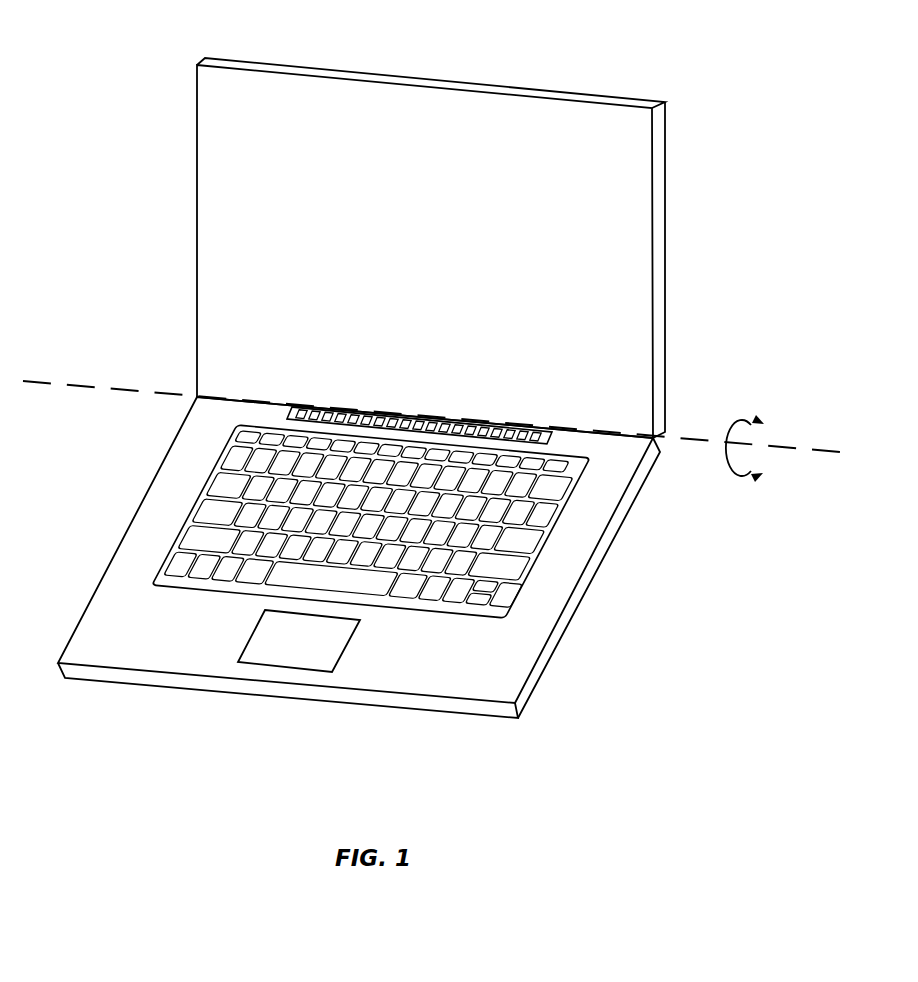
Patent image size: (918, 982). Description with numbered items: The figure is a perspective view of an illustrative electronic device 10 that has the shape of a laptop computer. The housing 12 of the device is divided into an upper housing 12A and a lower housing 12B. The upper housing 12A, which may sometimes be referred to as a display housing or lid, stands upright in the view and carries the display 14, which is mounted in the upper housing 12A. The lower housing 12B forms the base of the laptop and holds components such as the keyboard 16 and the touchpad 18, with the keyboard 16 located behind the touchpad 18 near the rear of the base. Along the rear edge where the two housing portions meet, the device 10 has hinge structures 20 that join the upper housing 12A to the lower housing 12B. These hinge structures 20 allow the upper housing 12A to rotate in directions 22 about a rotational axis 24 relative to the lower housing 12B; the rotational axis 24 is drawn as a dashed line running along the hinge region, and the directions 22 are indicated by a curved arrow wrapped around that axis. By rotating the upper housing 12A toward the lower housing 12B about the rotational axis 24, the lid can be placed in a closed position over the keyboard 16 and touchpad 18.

The electronic device 10 is at (724, 69).
The housing 12 is at (665, 372).
The upper housing 12A is at (183, 68).
The lower housing 12B is at (175, 403).
The display 14 is at (572, 240).
The keyboard 16 is at (538, 550).
The touchpad 18 is at (307, 672).
The hinge structures 20 is at (528, 421).
The directions 22 is at (745, 483).
The rotational axis 24 is at (40, 380).